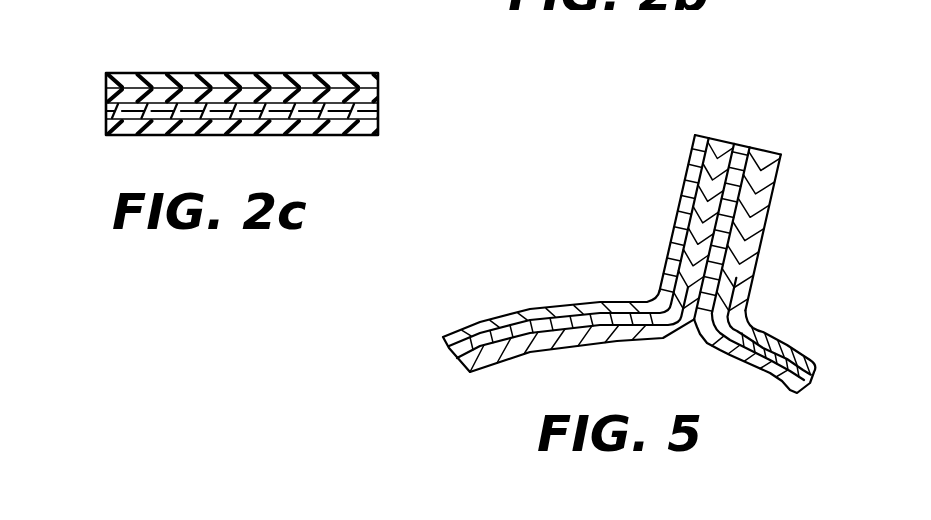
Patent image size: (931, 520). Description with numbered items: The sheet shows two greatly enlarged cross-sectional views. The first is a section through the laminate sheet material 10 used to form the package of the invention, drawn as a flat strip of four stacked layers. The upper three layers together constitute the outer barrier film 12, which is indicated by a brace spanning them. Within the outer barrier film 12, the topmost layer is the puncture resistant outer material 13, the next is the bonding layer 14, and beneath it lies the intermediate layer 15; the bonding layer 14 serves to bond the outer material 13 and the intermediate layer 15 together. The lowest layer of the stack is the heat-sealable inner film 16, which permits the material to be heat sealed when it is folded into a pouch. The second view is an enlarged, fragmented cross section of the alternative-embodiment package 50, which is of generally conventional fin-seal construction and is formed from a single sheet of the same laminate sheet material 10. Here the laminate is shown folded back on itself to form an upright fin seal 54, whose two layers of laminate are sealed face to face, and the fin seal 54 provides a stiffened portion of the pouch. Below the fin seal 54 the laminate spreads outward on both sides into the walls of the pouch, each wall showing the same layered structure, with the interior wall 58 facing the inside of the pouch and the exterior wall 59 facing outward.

In FIG. 2c, the laminate sheet material 10 is at (342, 70).
In FIG. 5, the laminate sheet material 10 is at (487, 314).
In FIG. 2c, the outer barrier film 12 is at (382, 73).
In FIG. 2c, the puncture resistant outer material 13 is at (106, 79).
In FIG. 2c, the bonding layer 14 is at (106, 93).
In FIG. 2c, the intermediate layer 15 is at (106, 110).
In FIG. 2c, the heat-sealable inner film 16 is at (106, 123).
In FIG. 5, the package 50 is at (738, 88).
In FIG. 5, the fin seal 54 is at (780, 148).
In FIG. 5, the interior wall 58 is at (547, 342).
In FIG. 5, the exterior wall 59 is at (548, 312).